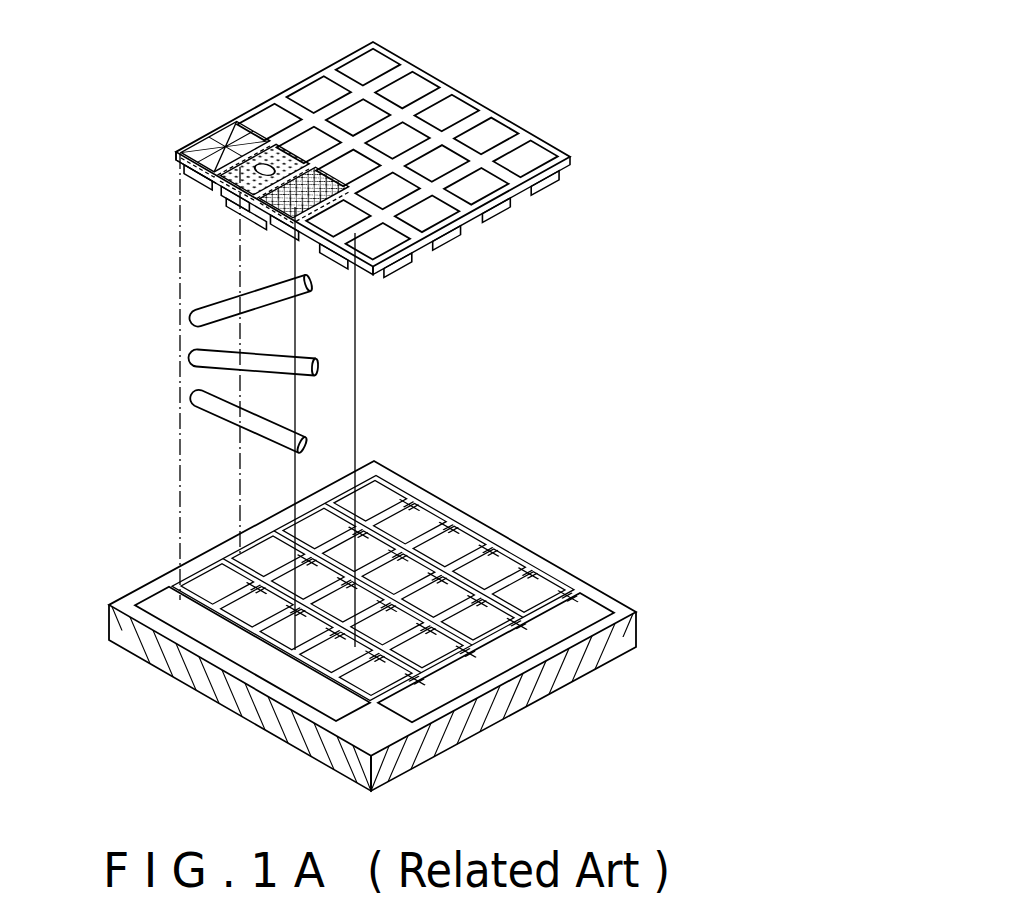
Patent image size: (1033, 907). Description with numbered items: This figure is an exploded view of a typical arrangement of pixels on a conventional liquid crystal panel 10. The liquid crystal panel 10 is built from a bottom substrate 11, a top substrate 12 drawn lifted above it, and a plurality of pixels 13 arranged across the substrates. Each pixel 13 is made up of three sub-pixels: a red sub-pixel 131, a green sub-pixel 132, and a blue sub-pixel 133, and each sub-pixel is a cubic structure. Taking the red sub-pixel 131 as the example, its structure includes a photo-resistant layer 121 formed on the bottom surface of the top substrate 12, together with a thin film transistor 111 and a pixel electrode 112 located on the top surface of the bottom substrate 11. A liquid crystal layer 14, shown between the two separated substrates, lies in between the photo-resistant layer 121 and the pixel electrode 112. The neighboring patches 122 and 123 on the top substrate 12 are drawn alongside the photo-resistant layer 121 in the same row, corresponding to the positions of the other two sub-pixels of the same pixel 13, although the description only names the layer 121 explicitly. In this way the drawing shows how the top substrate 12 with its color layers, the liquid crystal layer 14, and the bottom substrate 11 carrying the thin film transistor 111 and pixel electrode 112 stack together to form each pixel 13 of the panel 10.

The liquid crystal panel 10 is at (566, 89).
The bottom substrate 11 is at (628, 634).
The thin film transistor 111 is at (245, 552).
The pixel electrode 112 is at (215, 587).
The top substrate 12 is at (574, 158).
The photo-resistant layer 121 is at (221, 132).
The second sensing element 122 is at (274, 150).
The third sensing element 123 is at (326, 178).
The pixel 13 is at (67, 200).
The red sub-pixel 131 is at (182, 164).
The green sub-pixel 132 is at (214, 190).
The blue sub-pixel 133 is at (237, 222).
The liquid crystal layer 14 is at (196, 402).